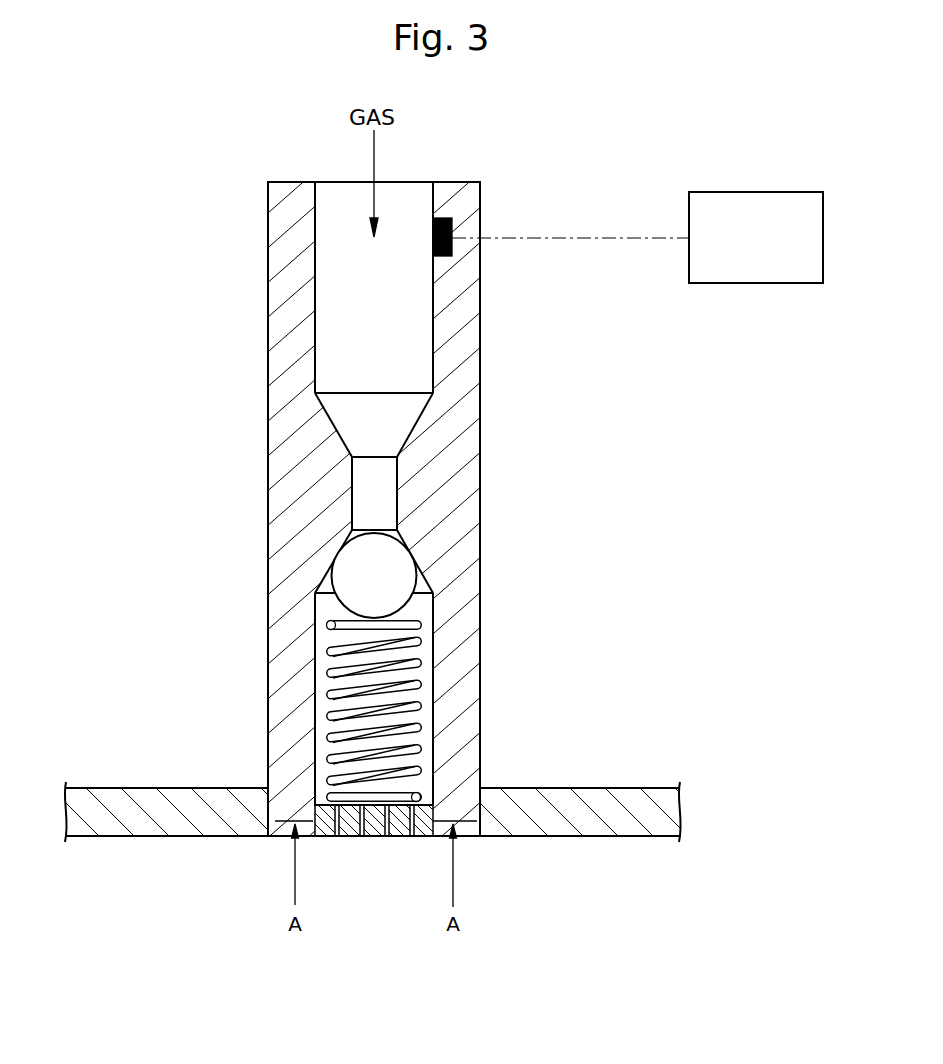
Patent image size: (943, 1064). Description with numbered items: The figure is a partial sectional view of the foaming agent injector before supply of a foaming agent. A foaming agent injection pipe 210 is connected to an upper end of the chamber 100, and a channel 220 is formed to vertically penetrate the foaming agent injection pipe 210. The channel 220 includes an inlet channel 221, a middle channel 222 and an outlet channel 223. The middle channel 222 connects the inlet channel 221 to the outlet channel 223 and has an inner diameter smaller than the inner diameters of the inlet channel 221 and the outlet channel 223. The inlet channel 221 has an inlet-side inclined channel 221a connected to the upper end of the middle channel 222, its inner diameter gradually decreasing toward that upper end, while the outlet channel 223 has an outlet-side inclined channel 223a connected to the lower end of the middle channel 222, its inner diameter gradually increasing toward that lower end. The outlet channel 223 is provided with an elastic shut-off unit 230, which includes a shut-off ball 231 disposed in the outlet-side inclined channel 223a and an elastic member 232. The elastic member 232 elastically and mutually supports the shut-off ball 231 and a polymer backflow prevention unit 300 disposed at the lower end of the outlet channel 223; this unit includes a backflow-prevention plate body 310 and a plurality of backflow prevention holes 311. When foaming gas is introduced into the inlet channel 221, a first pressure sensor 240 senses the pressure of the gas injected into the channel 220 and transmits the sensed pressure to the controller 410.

The chamber 100 is at (597, 812).
The foaming agent injection pipe 210 is at (450, 497).
The channel 220 is at (337, 493).
The inlet channel 221 is at (355, 299).
The inlet-side inclined channel 221a is at (407, 440).
The middle channel 222 is at (368, 485).
The outlet channel 223 is at (294, 699).
The outlet-side inclined channel 223a is at (407, 556).
The elastic shut-off unit 230 is at (494, 667).
The shut-off ball 231 is at (387, 583).
The elastic member 232 is at (385, 627).
The first pressure sensor 240 is at (440, 218).
The polymer backflow prevention unit 300 is at (377, 914).
The backflow-prevention plate body 310 is at (398, 836).
The backflow prevention holes 311 is at (362, 836).
The controller 410 is at (757, 190).